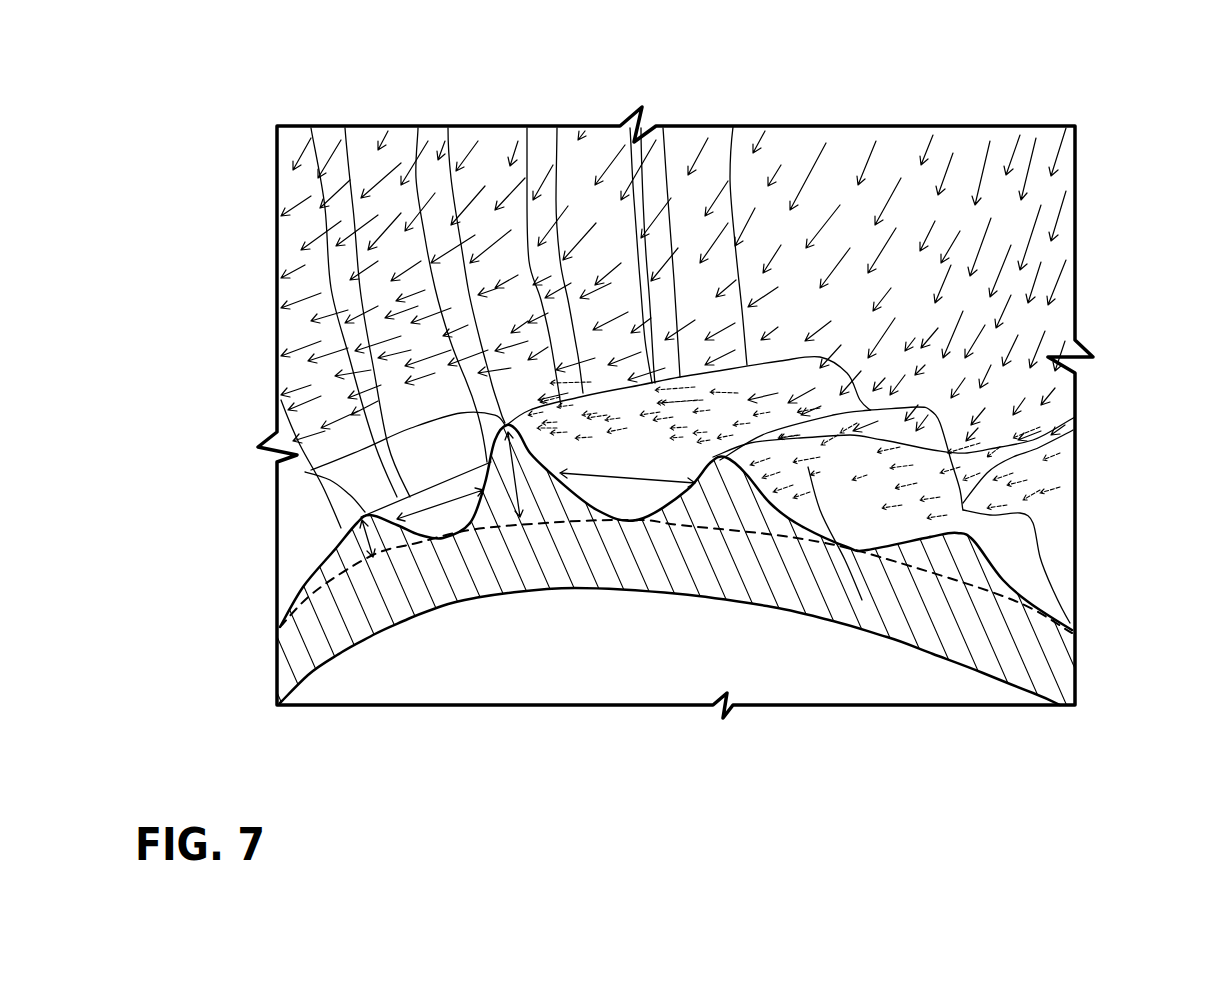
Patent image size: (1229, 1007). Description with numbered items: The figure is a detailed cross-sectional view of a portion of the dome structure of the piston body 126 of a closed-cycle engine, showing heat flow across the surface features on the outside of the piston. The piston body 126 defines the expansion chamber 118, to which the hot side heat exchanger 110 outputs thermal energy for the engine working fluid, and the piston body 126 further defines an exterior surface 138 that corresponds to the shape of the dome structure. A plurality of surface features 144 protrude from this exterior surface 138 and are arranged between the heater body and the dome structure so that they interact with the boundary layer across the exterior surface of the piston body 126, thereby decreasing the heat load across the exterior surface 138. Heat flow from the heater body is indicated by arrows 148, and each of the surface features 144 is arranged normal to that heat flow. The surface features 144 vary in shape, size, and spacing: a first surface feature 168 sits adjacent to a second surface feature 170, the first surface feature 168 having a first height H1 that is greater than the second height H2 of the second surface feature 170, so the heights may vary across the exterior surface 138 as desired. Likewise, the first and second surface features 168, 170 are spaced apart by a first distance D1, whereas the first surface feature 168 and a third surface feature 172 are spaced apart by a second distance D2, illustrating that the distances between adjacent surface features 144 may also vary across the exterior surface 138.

The hot side heat exchanger 110 is at (718, 153).
The expansion chamber 118 is at (783, 651).
The piston body 126 is at (1083, 672).
The exterior surface 138 is at (1017, 568).
The surface features 144 is at (1075, 417).
The arrows 148 is at (840, 477).
The first surface feature 168 is at (505, 430).
The second surface feature 170 is at (360, 525).
The third surface feature 172 is at (715, 452).
The first height H1 is at (520, 518).
The second height H2 is at (373, 557).
The first distance D1 is at (437, 505).
The second distance D2 is at (632, 483).